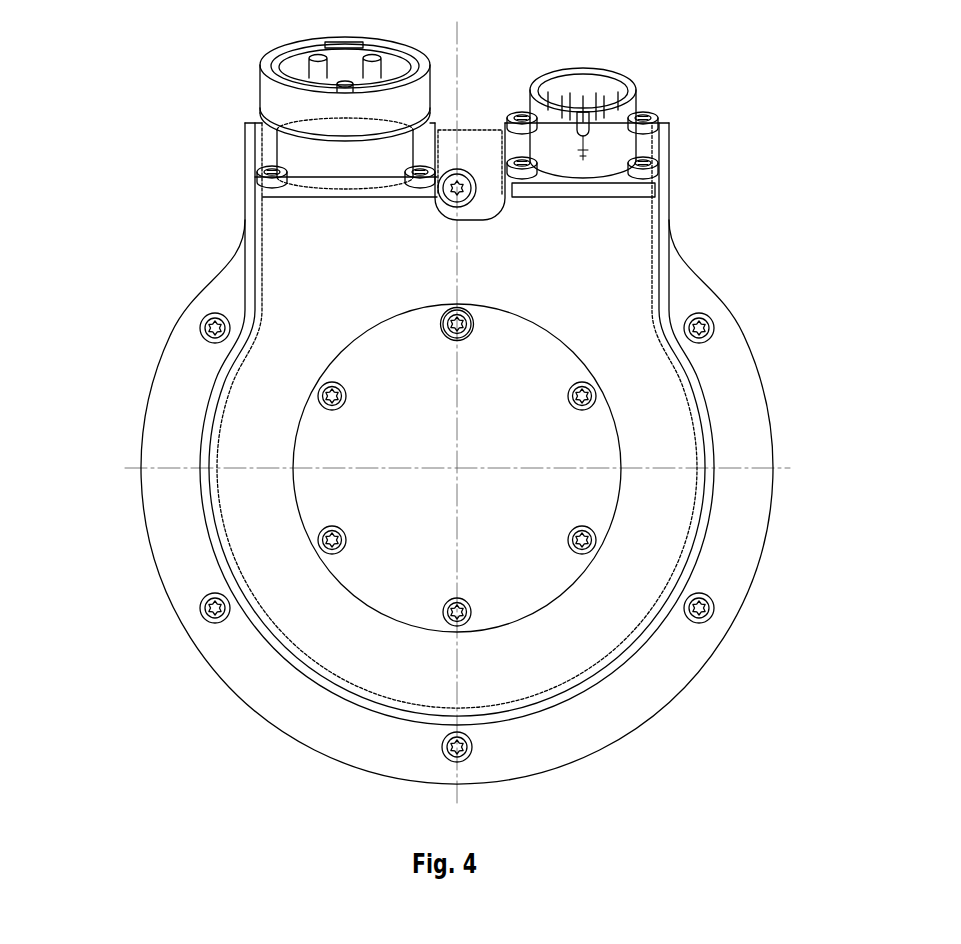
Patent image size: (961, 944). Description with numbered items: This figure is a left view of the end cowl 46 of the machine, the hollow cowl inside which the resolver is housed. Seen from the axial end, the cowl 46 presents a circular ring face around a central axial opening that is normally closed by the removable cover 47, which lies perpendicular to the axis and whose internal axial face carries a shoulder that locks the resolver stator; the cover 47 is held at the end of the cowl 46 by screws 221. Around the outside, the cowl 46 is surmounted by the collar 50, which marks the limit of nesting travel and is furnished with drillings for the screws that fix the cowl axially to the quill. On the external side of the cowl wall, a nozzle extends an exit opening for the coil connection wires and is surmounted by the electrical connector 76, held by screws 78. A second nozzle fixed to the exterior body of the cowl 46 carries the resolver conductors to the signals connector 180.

The cowl 46 is at (662, 412).
The removable cover 47 is at (362, 435).
The collar 50 is at (745, 456).
The electrical connector 76 is at (283, 107).
The screws 78 is at (257, 175).
The signals connector 180 is at (603, 128).
The screws 221 is at (475, 323).